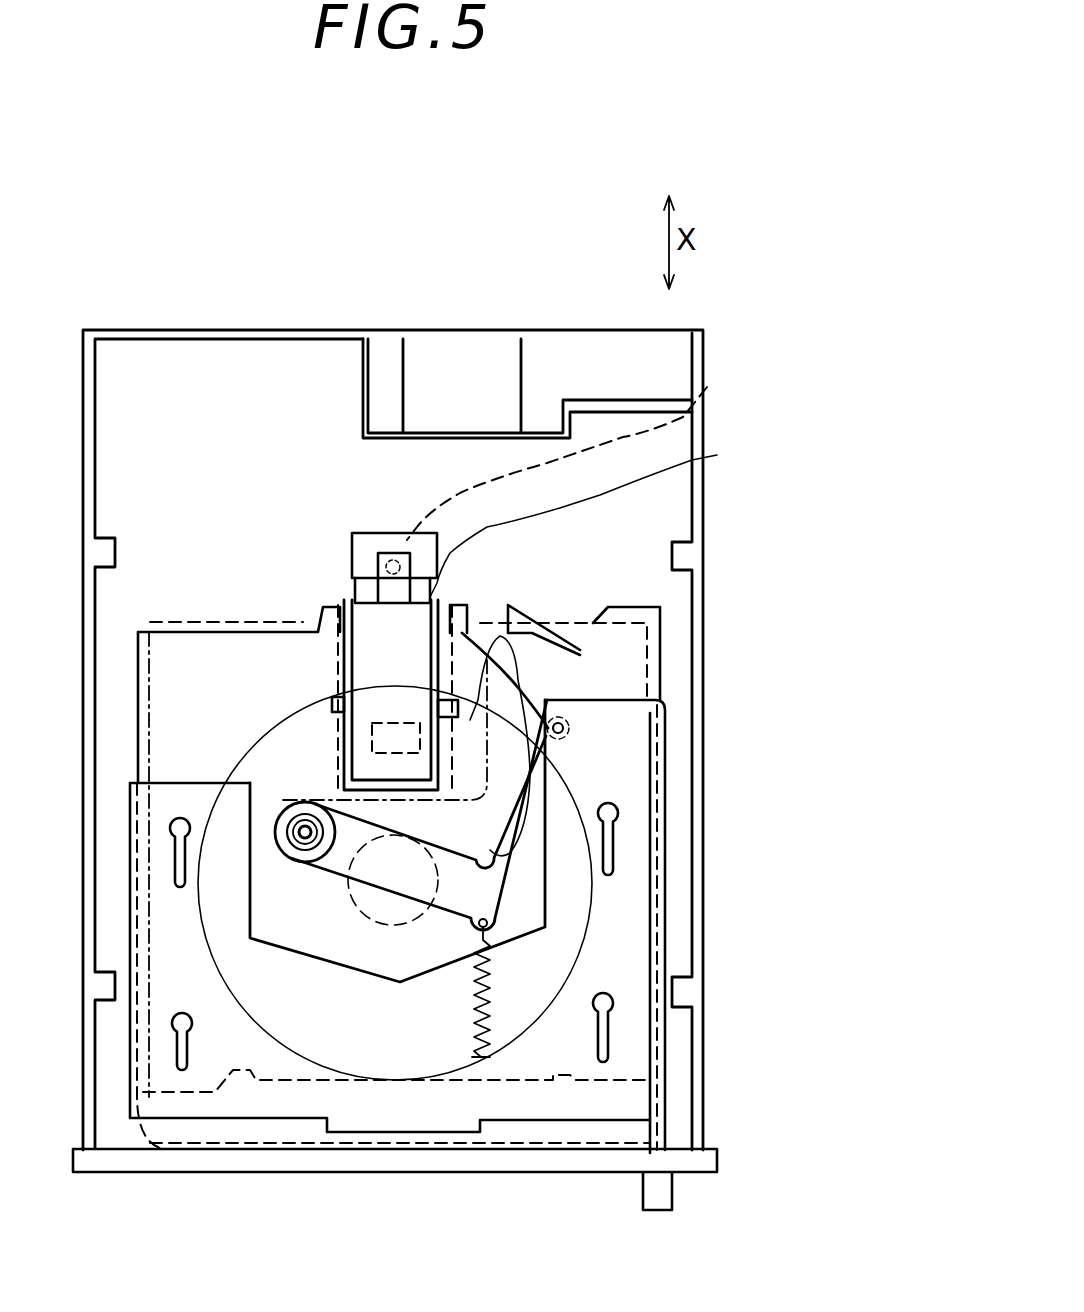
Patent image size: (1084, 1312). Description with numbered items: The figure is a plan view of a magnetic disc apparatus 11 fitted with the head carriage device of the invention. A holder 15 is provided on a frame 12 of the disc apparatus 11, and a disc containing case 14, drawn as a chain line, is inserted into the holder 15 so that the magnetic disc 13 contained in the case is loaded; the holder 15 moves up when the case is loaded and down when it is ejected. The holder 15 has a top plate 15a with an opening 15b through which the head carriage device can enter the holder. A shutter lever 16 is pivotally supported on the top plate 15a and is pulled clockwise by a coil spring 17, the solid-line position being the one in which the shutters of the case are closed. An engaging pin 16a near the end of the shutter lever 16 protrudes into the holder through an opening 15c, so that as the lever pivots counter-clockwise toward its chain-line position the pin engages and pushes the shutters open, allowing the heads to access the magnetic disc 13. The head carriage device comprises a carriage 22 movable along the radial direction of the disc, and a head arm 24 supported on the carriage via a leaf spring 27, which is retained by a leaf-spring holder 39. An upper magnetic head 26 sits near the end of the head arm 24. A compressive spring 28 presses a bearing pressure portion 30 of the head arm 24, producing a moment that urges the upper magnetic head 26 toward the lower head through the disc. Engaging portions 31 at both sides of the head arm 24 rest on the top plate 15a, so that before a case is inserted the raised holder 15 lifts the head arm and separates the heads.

The magnetic disc apparatus 11 is at (467, 216).
The frame 12 is at (697, 612).
The magnetic disc 13 is at (592, 940).
The disc containing case 14 is at (655, 790).
The holder 15 is at (212, 632).
The top plate 15a is at (177, 645).
The opening 15b is at (360, 790).
The opening 15c is at (537, 663).
The shutter lever 16 is at (330, 860).
The engaging pin 16a is at (568, 728).
The coil spring 17 is at (472, 1010).
The carriage 22 is at (663, 513).
The head arm 24 is at (330, 640).
The upper magnetic head 26 is at (393, 723).
The leaf spring 27 is at (355, 590).
The compressive spring 28 is at (705, 388).
The bearing pressure portion 30 is at (357, 583).
The engaging portions 31 is at (332, 706).
The leaf-spring holder 39 is at (395, 560).